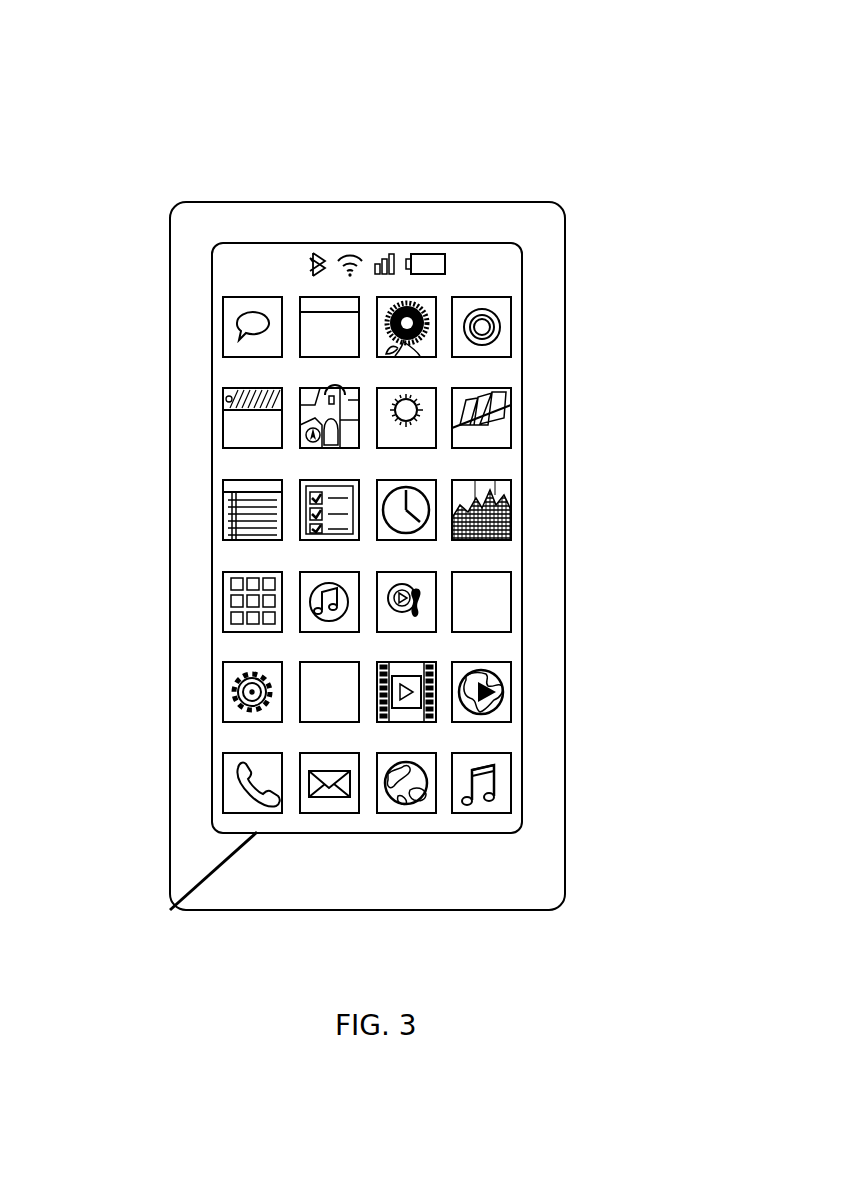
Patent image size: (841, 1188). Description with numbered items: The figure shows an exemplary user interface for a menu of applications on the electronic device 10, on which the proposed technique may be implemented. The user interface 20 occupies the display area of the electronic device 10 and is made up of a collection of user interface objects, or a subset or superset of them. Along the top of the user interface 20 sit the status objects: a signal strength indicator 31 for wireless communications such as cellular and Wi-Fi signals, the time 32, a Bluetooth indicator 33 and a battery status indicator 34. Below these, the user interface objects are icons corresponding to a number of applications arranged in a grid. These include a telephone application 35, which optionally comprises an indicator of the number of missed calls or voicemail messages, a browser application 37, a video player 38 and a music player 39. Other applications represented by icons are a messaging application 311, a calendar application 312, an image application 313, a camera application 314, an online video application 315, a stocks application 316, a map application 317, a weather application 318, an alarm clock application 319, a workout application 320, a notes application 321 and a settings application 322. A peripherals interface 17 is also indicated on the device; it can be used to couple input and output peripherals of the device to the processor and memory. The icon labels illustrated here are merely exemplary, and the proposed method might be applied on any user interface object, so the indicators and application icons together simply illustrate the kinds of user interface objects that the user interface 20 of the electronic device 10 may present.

The electronic device 10 is at (145, 175).
The user interface 20 is at (262, 268).
The peripherals interface 17 is at (170, 907).
The signal strength indicator 31 is at (350, 245).
The time 32 is at (492, 245).
The Bluetooth indicator 33 is at (316, 245).
The battery status indicator 34 is at (430, 245).
The telephone application 35 is at (223, 600).
The browser application 37 is at (420, 815).
The video player 38 is at (436, 690).
The music player 39 is at (300, 632).
The messaging application 311 is at (223, 330).
The calendar application 312 is at (300, 357).
The image application 313 is at (436, 305).
The camera application 314 is at (512, 320).
The online video application 315 is at (436, 610).
The stocks application 316 is at (512, 518).
The map application 317 is at (300, 447).
The weather application 318 is at (436, 400).
The alarm clock application 319 is at (436, 500).
The workout application 320 is at (512, 420).
The notes application 321 is at (223, 513).
The settings application 322 is at (223, 695).